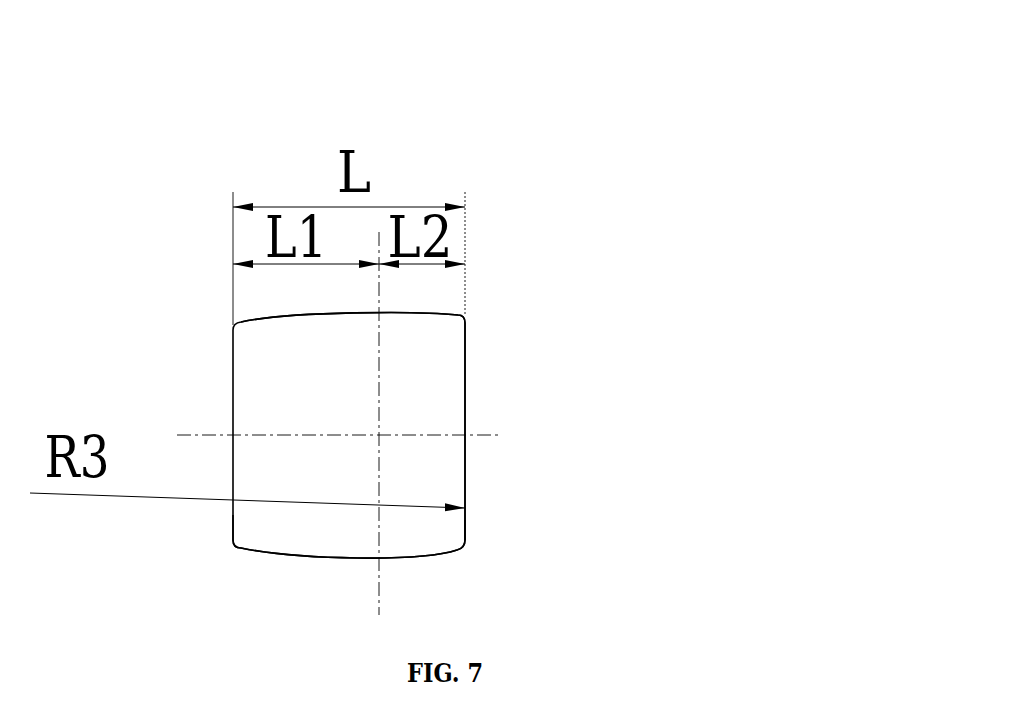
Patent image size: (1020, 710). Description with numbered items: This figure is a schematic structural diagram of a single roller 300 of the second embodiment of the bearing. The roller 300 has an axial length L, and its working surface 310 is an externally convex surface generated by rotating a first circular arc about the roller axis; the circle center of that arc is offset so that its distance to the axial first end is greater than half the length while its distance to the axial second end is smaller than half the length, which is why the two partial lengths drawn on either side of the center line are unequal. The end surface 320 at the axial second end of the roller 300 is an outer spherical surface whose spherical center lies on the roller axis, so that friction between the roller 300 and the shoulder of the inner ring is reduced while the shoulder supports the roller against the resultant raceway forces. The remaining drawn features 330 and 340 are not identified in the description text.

The roller 300 is at (547, 279).
The working surface of roller 310 is at (551, 216).
The end surface of roller 320 is at (663, 382).
The lower corner portion 330 is at (659, 513).
The bottom surface 340 is at (547, 576).